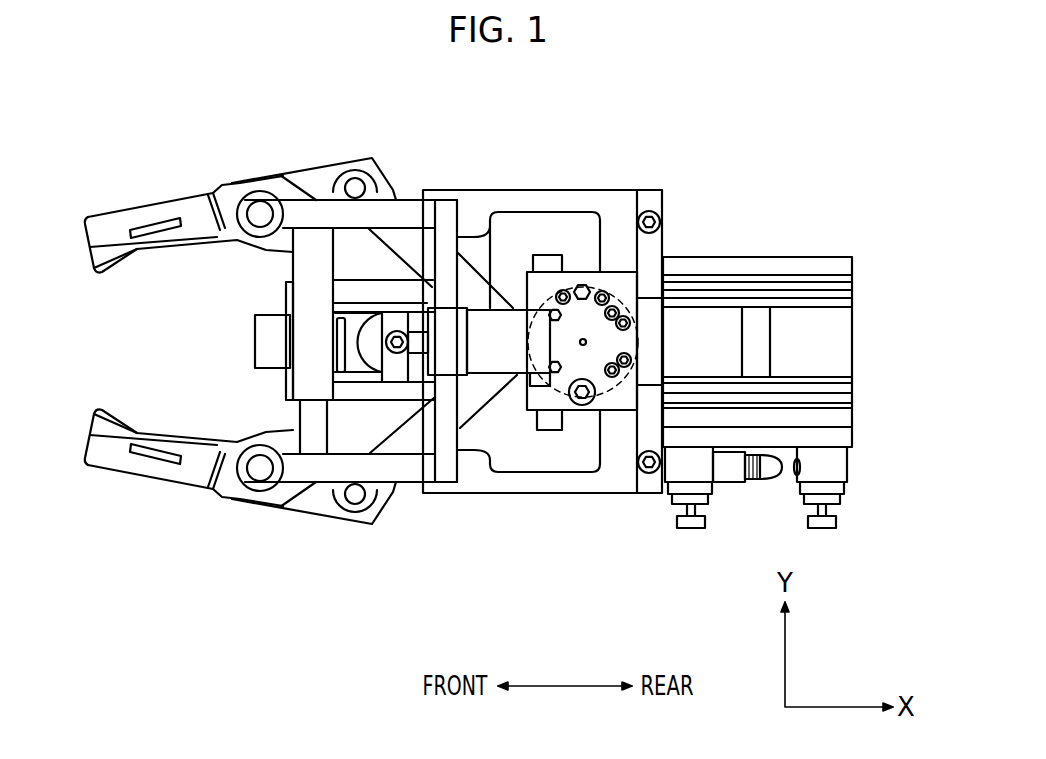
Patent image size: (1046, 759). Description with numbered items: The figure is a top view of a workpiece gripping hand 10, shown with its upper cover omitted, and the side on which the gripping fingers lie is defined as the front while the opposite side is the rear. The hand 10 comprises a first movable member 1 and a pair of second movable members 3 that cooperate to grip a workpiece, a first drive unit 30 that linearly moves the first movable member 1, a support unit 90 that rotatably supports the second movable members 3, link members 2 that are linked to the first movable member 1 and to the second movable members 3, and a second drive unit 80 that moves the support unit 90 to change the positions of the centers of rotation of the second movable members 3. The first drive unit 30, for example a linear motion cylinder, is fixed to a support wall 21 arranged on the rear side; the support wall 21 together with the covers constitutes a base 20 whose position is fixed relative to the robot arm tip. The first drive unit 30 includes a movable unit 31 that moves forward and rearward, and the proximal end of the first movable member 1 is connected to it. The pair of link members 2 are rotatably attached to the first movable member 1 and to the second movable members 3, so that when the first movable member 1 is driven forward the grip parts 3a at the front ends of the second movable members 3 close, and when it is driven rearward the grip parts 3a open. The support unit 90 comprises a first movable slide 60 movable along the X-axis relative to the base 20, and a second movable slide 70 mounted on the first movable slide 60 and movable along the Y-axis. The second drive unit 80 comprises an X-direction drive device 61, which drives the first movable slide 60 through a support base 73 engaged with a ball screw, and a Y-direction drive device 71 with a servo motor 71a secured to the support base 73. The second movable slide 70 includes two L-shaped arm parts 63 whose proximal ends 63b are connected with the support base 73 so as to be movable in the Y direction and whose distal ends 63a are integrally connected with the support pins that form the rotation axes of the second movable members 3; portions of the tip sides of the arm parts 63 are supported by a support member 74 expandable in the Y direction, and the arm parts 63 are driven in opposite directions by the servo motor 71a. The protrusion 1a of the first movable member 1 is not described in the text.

The first movable member 1 is at (516, 283).
The clamp protrusion 1a is at (253, 335).
The link member 2 is at (410, 247).
The second movable member 3 is at (247, 181).
The grip part 3a is at (122, 262).
The hand 10 is at (745, 209).
The base 20 is at (664, 208).
The support wall 21 is at (648, 493).
The first drive unit 30 is at (858, 405).
The movable unit 31 is at (580, 289).
The first movable slide 60 is at (473, 392).
The X-direction drive device 61 is at (784, 346).
The arm part 63 is at (322, 200).
The distal end 63a is at (287, 195).
The proximal end 63b is at (453, 297).
The second movable slide 70 is at (415, 200).
The Y-direction drive device 71 is at (495, 377).
The servo motor 71a is at (545, 432).
The support base 73 is at (443, 357).
The support member 74 is at (297, 422).
The second drive unit 80 is at (553, 285).
The support unit 90 is at (433, 508).